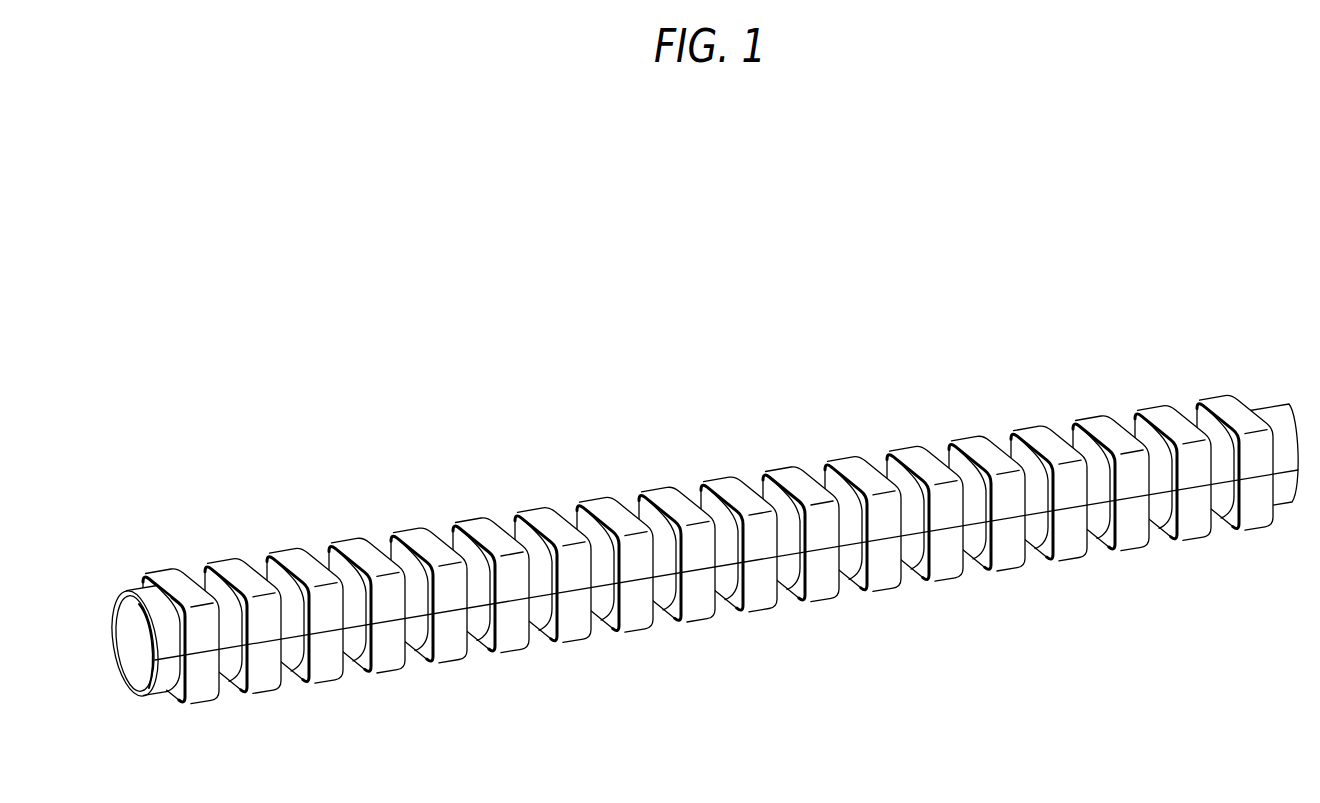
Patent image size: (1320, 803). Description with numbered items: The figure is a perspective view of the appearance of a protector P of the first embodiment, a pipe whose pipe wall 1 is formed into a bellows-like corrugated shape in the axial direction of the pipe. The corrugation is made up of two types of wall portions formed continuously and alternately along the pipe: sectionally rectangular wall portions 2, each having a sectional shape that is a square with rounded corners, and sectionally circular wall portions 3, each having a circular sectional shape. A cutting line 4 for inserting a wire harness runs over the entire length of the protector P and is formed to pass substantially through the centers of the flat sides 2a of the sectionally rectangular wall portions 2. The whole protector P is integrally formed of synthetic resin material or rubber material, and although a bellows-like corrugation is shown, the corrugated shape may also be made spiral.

The pipe wall 1 is at (701, 512).
The sectionally rectangular wall portion 2 is at (708, 505).
The flat side 2a is at (1132, 530).
The sectionally circular wall portion 3 is at (957, 465).
The cutting line 4 is at (885, 543).
The protector P is at (412, 515).